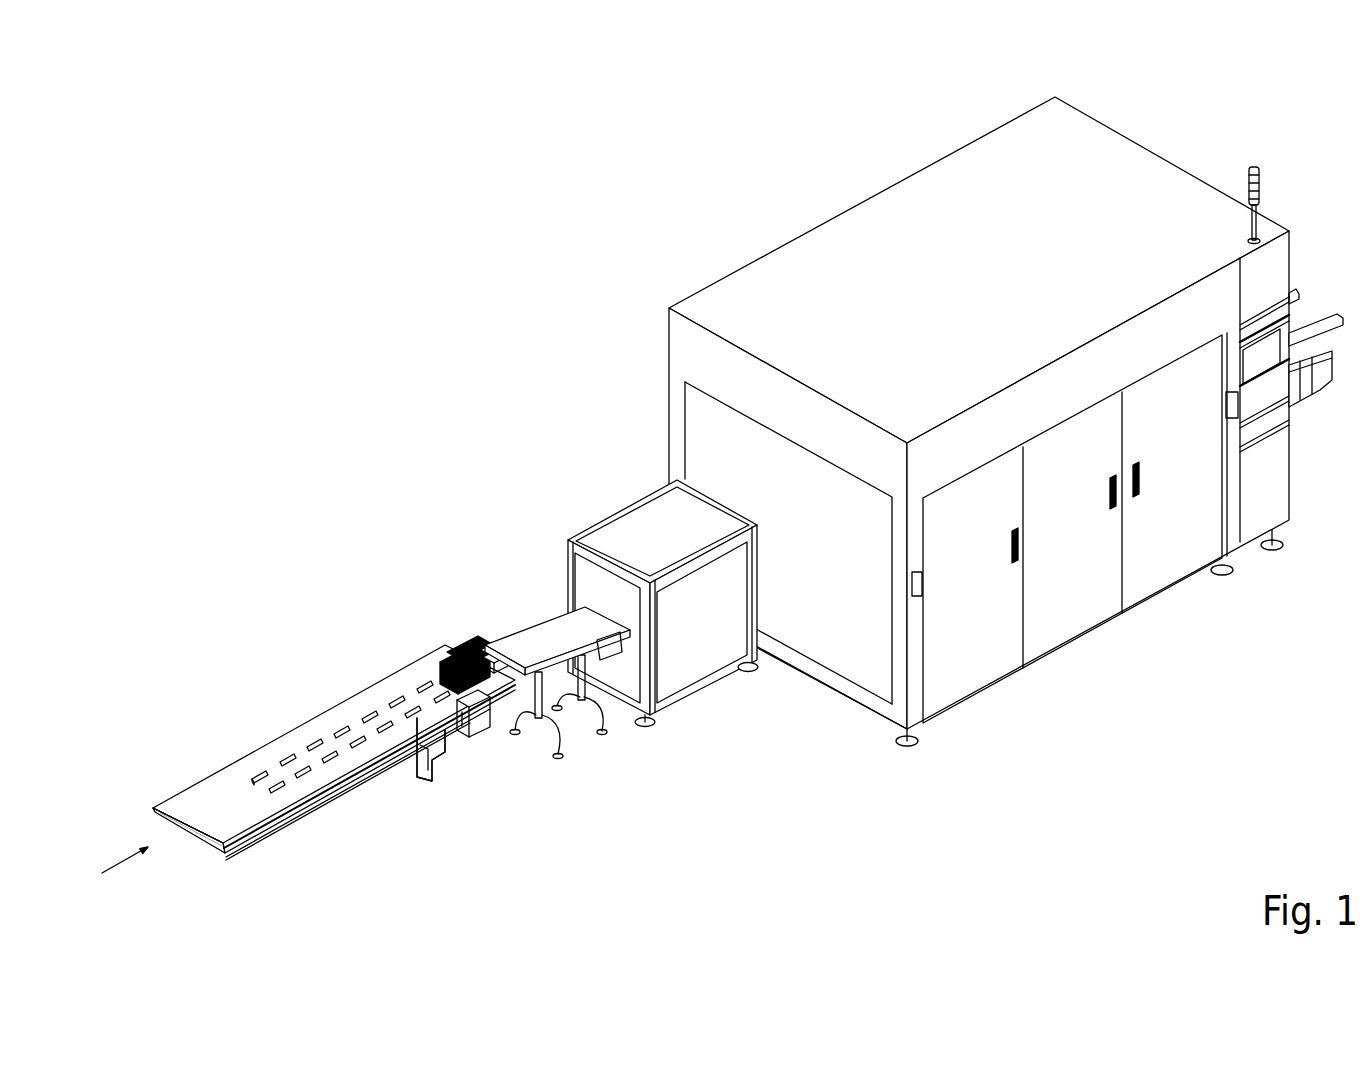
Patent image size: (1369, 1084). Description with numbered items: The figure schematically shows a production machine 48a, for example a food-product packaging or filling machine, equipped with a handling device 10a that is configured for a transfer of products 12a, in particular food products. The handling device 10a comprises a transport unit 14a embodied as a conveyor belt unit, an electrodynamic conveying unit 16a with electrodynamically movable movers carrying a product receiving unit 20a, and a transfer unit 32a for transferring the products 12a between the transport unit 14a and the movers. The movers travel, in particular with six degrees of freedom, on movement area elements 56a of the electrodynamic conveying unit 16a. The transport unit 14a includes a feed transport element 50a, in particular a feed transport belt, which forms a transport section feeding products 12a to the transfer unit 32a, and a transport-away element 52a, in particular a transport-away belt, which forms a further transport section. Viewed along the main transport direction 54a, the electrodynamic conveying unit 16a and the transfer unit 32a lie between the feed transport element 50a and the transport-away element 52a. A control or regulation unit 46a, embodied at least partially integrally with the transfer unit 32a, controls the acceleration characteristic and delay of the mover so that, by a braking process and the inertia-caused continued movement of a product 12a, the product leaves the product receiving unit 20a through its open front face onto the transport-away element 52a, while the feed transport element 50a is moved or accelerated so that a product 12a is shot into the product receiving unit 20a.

The handling device 10a is at (343, 594).
The products 12a is at (263, 775).
The transport unit 14a is at (156, 775).
The electrodynamic conveying unit 16a is at (487, 739).
The product receiving unit 20a is at (463, 637).
The transfer unit 32a is at (470, 732).
The control or regulation unit 46a is at (479, 791).
The production machine 48a is at (1226, 130).
The feed transport element 50a is at (200, 812).
The transport-away element 52a is at (527, 647).
The main transport direction 54a is at (123, 857).
The movement area elements 56a is at (445, 658).